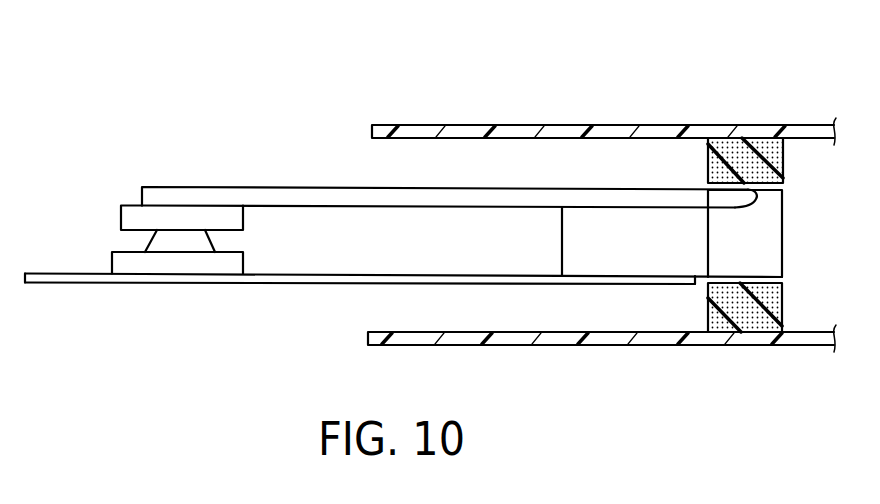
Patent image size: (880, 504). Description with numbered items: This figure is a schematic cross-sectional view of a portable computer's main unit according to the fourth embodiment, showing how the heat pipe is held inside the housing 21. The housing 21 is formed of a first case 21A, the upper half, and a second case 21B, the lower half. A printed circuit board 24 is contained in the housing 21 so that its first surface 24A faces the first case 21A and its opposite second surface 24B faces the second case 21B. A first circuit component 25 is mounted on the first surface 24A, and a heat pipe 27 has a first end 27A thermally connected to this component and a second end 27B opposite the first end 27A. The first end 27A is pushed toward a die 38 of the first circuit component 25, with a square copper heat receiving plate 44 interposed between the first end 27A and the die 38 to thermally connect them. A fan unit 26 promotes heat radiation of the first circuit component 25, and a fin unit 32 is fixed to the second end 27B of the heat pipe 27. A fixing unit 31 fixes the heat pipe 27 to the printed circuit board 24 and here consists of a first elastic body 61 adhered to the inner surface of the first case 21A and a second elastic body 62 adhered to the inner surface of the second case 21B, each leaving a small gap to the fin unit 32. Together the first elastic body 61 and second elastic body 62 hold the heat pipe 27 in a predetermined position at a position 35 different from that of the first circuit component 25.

The housing 21 is at (507, 94).
The first case 21A is at (540, 128).
The second case 21B is at (580, 348).
The printed circuit board 24 is at (314, 306).
The first surface 24A is at (37, 272).
The second surface 24B is at (36, 285).
The first circuit component 25 is at (165, 265).
The fan unit 26 is at (632, 226).
The heat pipe 27 is at (441, 188).
The first end 27A is at (195, 197).
The second end 27B is at (752, 197).
The fixing unit 31 is at (753, 112).
The fin unit 32 is at (790, 239).
The position 35 is at (789, 112).
The die 38 is at (198, 245).
The heat receiving plate 44 is at (126, 220).
The first elastic body 61 is at (786, 165).
The second elastic body 62 is at (785, 313).